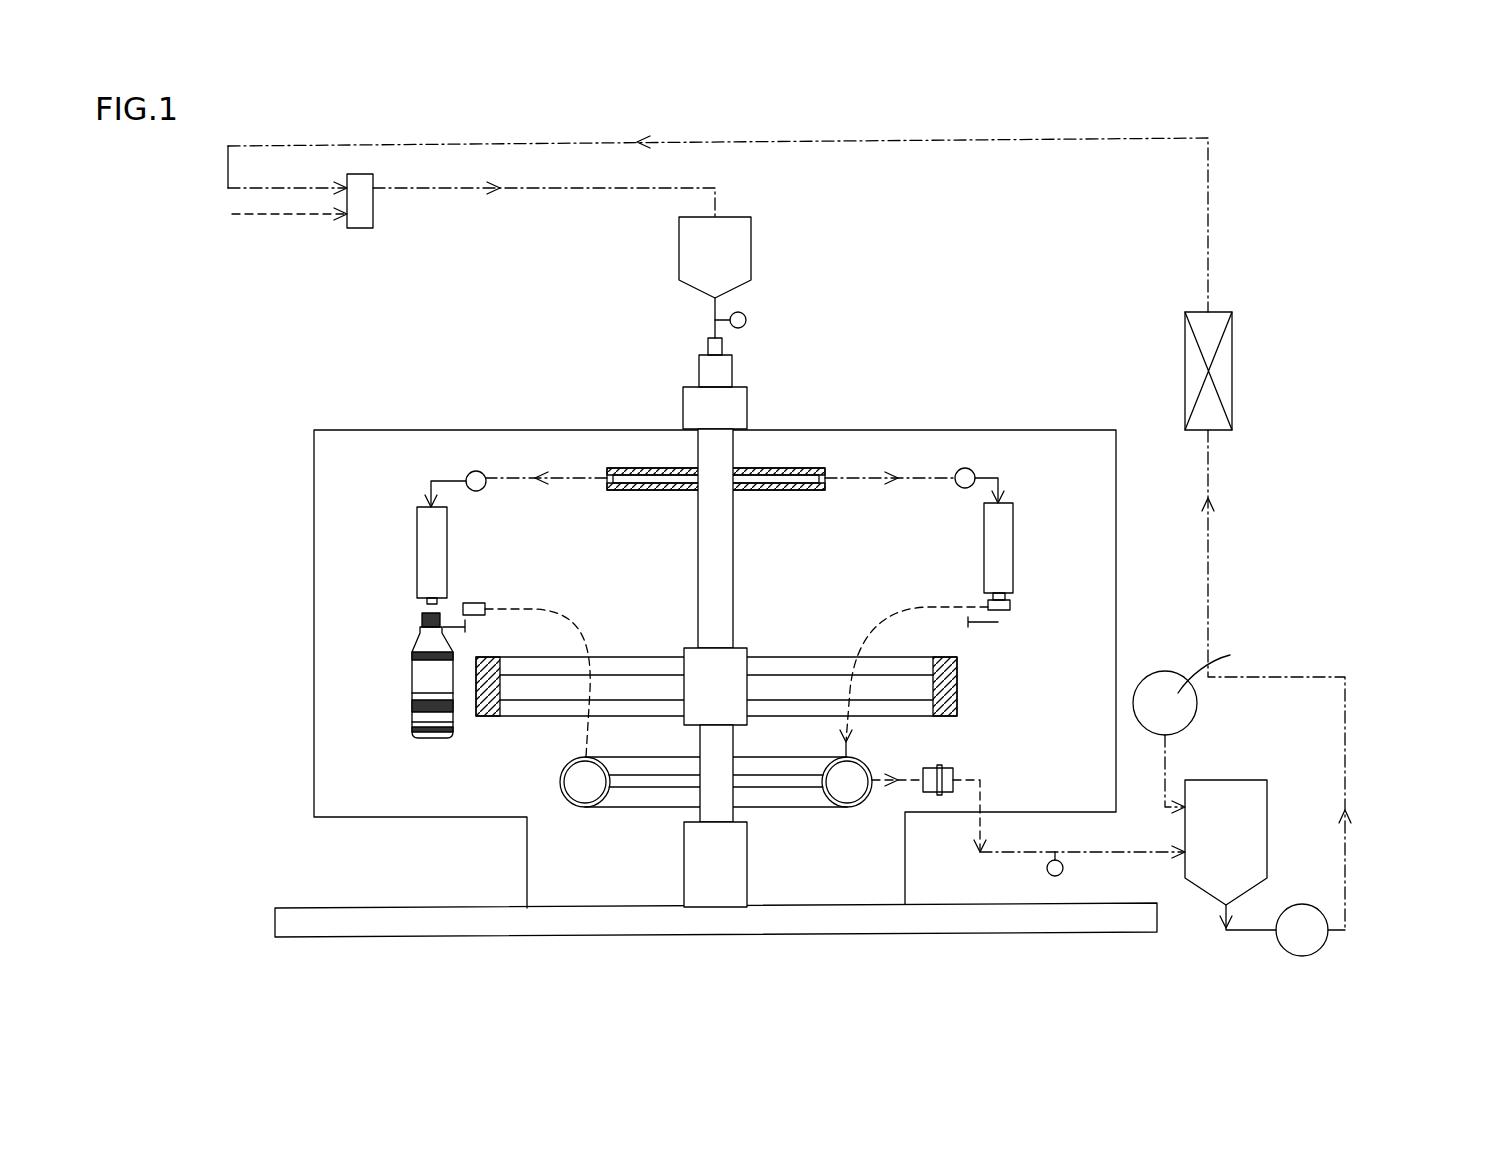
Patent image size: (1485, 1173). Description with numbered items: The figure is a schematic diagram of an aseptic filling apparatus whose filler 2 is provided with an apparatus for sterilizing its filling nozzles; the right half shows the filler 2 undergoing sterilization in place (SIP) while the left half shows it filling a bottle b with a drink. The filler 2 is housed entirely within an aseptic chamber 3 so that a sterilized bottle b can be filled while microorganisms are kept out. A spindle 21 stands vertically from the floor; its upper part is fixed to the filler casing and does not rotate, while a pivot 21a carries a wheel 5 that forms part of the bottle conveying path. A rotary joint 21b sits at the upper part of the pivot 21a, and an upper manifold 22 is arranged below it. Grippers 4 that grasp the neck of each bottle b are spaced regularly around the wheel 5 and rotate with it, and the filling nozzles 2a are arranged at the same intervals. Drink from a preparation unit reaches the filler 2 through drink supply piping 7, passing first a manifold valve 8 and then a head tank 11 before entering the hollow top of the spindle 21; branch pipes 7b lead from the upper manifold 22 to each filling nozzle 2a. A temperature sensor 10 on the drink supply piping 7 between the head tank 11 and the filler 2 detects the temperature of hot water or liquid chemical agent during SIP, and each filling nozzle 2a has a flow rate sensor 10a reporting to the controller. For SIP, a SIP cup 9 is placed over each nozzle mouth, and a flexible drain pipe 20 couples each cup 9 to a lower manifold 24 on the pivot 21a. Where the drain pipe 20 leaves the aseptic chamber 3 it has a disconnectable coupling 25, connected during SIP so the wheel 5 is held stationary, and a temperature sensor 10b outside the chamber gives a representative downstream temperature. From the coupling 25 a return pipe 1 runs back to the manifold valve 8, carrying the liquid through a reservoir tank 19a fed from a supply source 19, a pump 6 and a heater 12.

The return pipe 1 is at (1213, 596).
The filler 2 is at (635, 410).
The filling nozzle 2a is at (417, 538).
The aseptic chamber 3 is at (314, 636).
The gripper 4 is at (447, 620).
The wheel 5 is at (957, 690).
The pump 6 is at (1298, 904).
The drink supply piping 7 is at (549, 190).
The branch pipe 7b is at (565, 490).
The manifold valve 8 is at (358, 228).
The SIP cup 9 is at (477, 603).
The temperature sensor 10 is at (746, 320).
The flow rate sensor 10a is at (475, 471).
The temperature sensor 10b is at (1063, 868).
The head tank 11 is at (751, 250).
The heater 12 is at (1212, 311).
The supply source 19 is at (1160, 673).
The reservoir tank 19a is at (1233, 780).
The drain pipe 20 is at (582, 622).
The spindle 21 is at (684, 850).
The pivot 21a is at (733, 598).
The rotary joint 21b is at (747, 407).
The upper manifold 22 is at (770, 490).
The lower manifold 24 is at (795, 807).
The coupling 25 is at (935, 793).
The bottle b is at (412, 688).